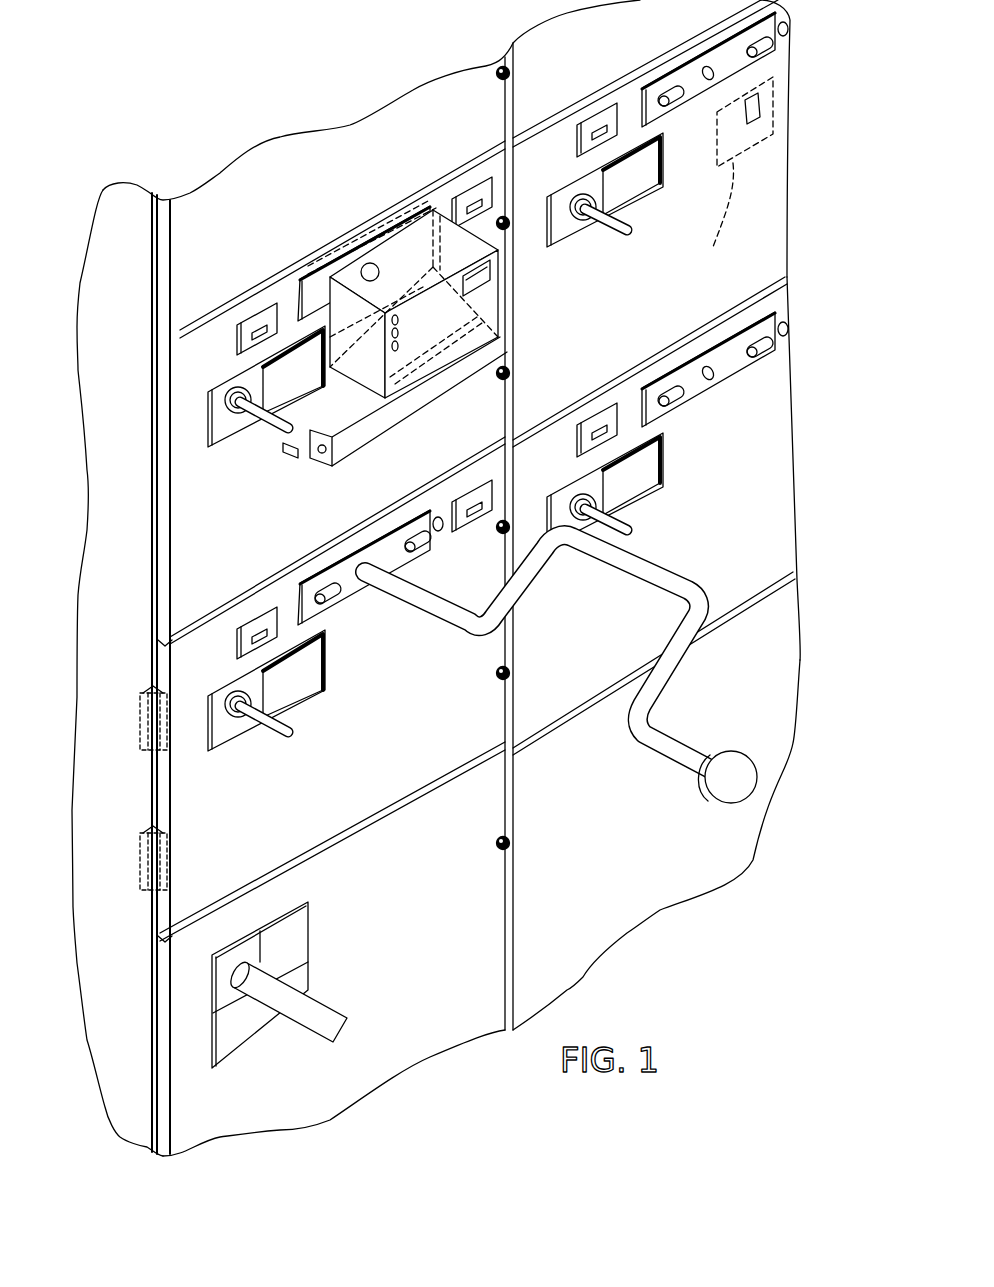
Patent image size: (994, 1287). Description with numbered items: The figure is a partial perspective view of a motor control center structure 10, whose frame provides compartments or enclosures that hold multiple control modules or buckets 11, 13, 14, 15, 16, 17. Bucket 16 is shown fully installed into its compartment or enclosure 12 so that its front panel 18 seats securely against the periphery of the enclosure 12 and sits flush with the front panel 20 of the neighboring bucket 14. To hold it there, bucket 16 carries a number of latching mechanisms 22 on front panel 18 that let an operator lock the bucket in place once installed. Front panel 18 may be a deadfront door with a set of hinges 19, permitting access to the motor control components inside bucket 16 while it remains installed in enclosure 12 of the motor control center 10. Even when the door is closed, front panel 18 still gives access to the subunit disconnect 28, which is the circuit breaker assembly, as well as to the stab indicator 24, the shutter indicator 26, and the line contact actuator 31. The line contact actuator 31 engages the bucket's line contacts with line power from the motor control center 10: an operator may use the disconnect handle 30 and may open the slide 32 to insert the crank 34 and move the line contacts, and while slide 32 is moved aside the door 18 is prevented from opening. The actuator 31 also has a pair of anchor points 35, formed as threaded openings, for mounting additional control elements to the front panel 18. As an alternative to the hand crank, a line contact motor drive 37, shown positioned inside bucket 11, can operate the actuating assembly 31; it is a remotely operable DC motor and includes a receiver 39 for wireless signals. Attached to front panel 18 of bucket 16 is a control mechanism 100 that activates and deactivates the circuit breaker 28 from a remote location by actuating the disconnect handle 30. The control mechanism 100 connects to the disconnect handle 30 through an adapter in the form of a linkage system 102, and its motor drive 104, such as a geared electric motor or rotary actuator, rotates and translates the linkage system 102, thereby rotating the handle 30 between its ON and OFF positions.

The motor control center structure 10 is at (812, 152).
The bucket 11 is at (770, 218).
The compartment or enclosure 12 is at (148, 793).
The bucket 13 is at (160, 233).
The bucket 14 is at (160, 992).
The bucket 15 is at (778, 682).
The bucket 16 is at (160, 656).
The bucket 17 is at (772, 473).
The front panel 18 is at (357, 777).
The hinges 19 is at (143, 726).
The front panel 20 is at (397, 1003).
The latching mechanisms 22 is at (508, 522).
The stab indicator 24 is at (270, 608).
The shutter indicator 26 is at (476, 520).
The subunit disconnect 28 is at (308, 678).
The disconnect handle 30 is at (272, 726).
The line contact actuator 31 is at (326, 560).
The slide 32 is at (393, 550).
The crank 34 is at (634, 564).
The anchor points 35 is at (755, 350).
The line contact motor drive 37 is at (715, 219).
The receiver 39 is at (760, 104).
The control mechanism 100 is at (492, 300).
The linkage system 102 is at (392, 420).
The motor drive 104 is at (354, 255).